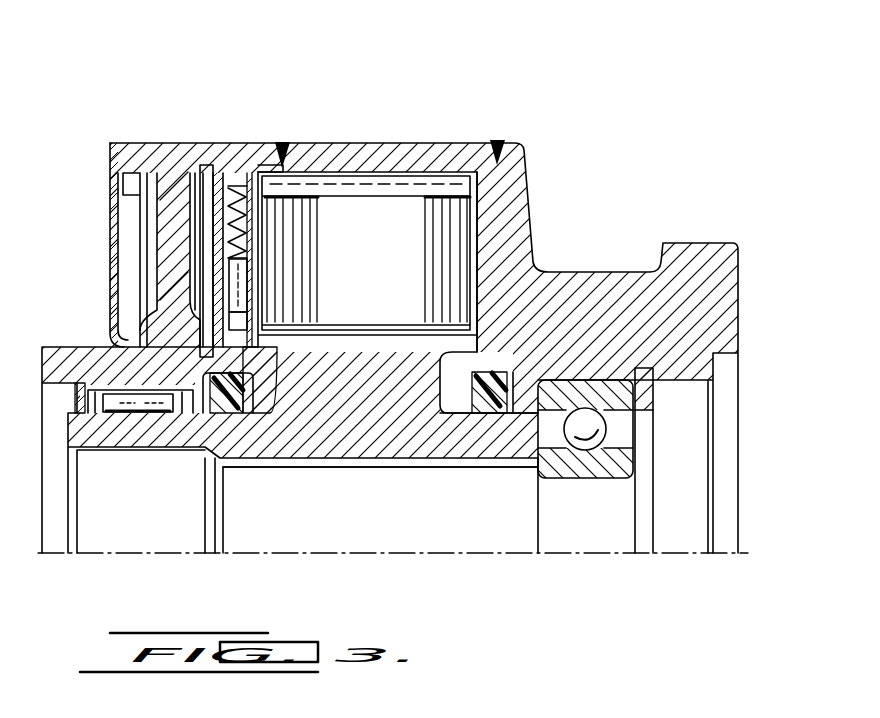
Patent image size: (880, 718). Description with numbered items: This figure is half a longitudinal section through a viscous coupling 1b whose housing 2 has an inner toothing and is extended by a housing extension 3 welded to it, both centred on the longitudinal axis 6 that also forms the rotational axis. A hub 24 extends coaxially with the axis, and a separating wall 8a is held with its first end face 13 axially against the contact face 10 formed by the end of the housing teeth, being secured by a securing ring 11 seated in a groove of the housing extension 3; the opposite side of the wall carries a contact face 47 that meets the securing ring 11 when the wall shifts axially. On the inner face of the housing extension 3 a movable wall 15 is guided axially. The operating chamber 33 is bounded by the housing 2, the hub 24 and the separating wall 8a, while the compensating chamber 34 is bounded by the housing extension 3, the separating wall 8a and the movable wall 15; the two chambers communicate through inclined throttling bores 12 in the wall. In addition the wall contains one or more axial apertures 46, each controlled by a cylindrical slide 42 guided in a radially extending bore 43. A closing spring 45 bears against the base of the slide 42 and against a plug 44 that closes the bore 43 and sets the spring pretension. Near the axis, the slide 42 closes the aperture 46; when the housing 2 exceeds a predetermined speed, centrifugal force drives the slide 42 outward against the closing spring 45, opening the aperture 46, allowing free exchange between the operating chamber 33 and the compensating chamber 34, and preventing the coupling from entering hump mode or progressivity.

The coupling 1b is at (742, 130).
The housing 2 is at (478, 148).
The housing extension 3 is at (118, 150).
The longitudinal axis 6 is at (574, 553).
The separating wall 8a is at (230, 330).
The contact face 10 is at (262, 178).
The securing ring 11 is at (200, 172).
The throttling bore 12 is at (177, 307).
The first end face 13 is at (258, 224).
The movable wall 15 is at (170, 282).
The hub 24 is at (473, 435).
The operating chamber 33 is at (398, 305).
The compensating chamber 34 is at (192, 340).
The slide 42 is at (157, 258).
The bore 43 is at (247, 325).
The plug 44 is at (241, 180).
The closing spring 45 is at (235, 262).
The aperture 46 is at (243, 320).
The contact face 47 is at (229, 176).